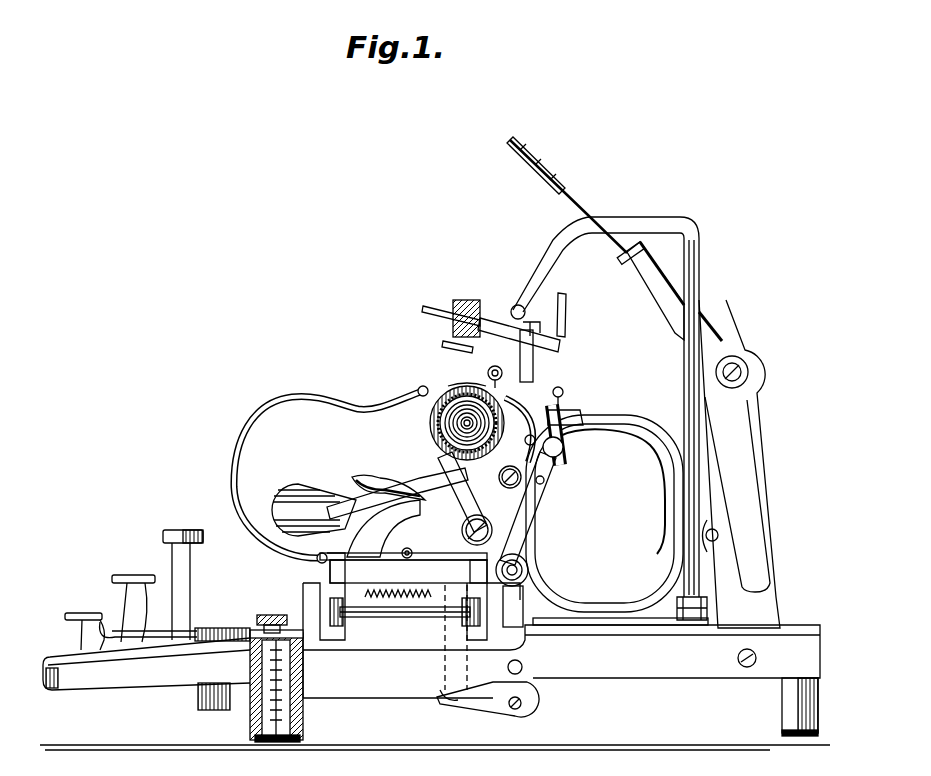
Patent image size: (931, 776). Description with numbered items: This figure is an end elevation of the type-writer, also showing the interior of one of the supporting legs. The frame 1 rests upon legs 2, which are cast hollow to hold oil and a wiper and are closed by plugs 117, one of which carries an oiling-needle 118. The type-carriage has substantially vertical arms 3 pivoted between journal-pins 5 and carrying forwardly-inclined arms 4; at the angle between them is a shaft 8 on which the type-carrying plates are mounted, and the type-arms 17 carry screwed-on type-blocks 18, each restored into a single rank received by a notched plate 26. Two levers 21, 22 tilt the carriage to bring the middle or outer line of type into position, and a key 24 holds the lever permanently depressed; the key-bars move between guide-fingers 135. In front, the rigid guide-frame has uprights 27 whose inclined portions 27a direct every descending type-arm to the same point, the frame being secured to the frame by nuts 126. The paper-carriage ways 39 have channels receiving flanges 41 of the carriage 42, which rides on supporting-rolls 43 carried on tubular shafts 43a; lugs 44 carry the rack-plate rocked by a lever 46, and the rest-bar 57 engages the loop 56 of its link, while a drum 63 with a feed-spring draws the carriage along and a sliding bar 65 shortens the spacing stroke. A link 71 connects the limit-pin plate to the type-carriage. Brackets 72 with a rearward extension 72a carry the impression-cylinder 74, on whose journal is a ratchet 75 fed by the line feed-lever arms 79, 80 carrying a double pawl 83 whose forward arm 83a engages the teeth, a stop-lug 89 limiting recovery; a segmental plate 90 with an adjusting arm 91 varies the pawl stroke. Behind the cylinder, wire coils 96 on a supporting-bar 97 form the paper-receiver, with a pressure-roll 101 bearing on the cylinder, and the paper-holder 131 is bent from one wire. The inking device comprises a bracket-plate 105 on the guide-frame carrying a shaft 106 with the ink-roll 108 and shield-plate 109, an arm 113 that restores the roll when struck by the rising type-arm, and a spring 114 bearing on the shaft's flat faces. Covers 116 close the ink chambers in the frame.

The frame 1 is at (561, 640).
The legs 2 is at (782, 706).
The substantially vertical arms 3 is at (760, 550).
The forwardly-inclined arms 4 is at (656, 300).
The journal-pins 5 is at (753, 658).
The shaft 8 is at (740, 360).
The type-arms 17 is at (568, 196).
The type-blocks 18 is at (536, 165).
The lever 21 is at (78, 632).
The lever 22 is at (137, 608).
The key 24 is at (146, 650).
The notched plate 26 is at (628, 243).
The uprights of the guide-frame 27 is at (684, 402).
The inclined portions of the guide-frame 27a is at (553, 255).
The paper-carriage ways 39 is at (303, 595).
The flanges 41 is at (350, 581).
The carriage 42 is at (408, 571).
The supporting-rolls 43 is at (345, 628).
The tubular shafts 43a is at (405, 621).
The lugs 44 is at (407, 548).
The lever 46 is at (314, 510).
The loop 56 is at (445, 702).
The rest-bar 57 is at (470, 699).
The drum 63 is at (388, 594).
The sliding bar 65 is at (528, 567).
The link 71 is at (580, 597).
The brackets 72 is at (383, 528).
The rearward extension of the bracket-frame 72a is at (538, 503).
The impression-cylinder 74 is at (457, 387).
The ratchet 75 is at (440, 428).
The arm of the line feed-lever 79 is at (397, 493).
The arm of the line feed-lever 80 is at (483, 520).
The double pawl 83 is at (548, 485).
The forward arm of the pawl 83a is at (462, 492).
The stop-lug 89 is at (478, 555).
The segmental plate 90 is at (546, 439).
The arm 91 is at (512, 406).
The wire coils 96 is at (633, 447).
The supporting-bar 97 is at (570, 408).
The roll 101 is at (488, 373).
The bracket-plate 105 is at (515, 305).
The shaft 106 is at (496, 333).
The ink-roll 108 is at (465, 300).
The shield-plate 109 is at (448, 346).
The arm 113 is at (563, 305).
The spring 114 is at (536, 318).
The covers 116 is at (620, 614).
The plugs 117 is at (262, 617).
The oiling-needle 118 is at (303, 683).
The nuts 126 is at (677, 606).
The paper-holder 131 is at (331, 471).
The guide-fingers 135 is at (198, 700).